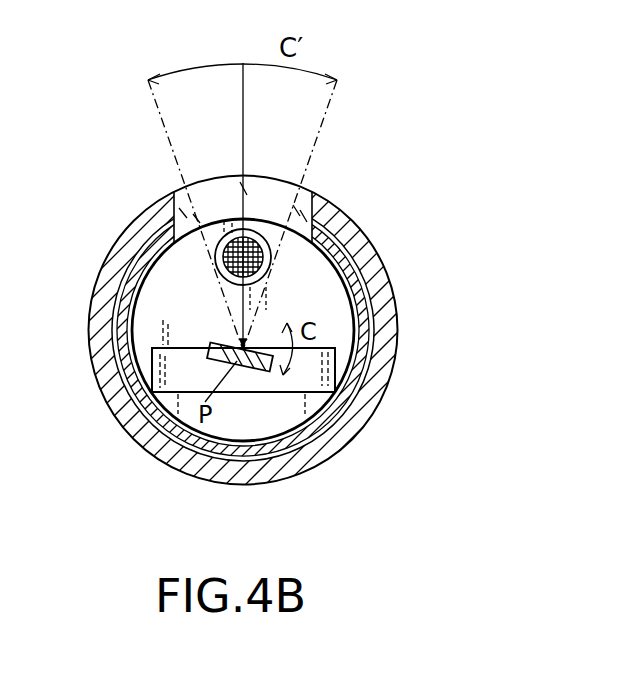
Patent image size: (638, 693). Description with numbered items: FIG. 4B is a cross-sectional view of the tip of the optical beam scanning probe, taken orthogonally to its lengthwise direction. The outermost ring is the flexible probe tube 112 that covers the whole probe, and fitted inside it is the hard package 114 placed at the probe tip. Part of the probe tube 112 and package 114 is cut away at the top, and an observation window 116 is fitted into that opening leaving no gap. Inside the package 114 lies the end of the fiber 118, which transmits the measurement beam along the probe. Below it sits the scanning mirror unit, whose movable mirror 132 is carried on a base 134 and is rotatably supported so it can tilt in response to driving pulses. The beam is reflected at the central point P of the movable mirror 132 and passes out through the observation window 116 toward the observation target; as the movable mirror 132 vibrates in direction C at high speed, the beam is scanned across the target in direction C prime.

The probe tube 112 is at (386, 305).
The package 114 is at (332, 413).
The observation window 116 is at (300, 190).
The fiber 118 is at (216, 251).
The movable mirror 132 is at (213, 343).
The base 134 is at (243, 393).